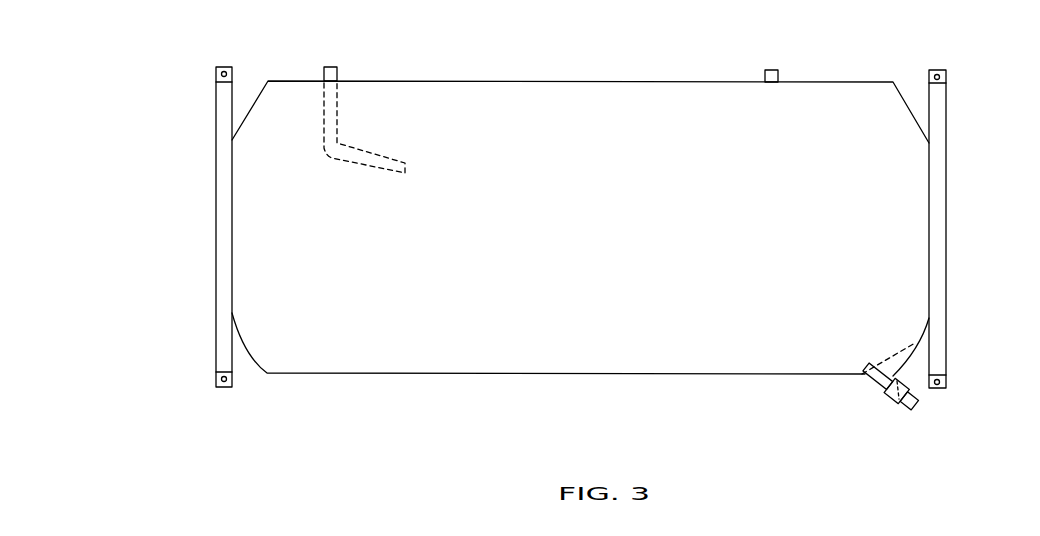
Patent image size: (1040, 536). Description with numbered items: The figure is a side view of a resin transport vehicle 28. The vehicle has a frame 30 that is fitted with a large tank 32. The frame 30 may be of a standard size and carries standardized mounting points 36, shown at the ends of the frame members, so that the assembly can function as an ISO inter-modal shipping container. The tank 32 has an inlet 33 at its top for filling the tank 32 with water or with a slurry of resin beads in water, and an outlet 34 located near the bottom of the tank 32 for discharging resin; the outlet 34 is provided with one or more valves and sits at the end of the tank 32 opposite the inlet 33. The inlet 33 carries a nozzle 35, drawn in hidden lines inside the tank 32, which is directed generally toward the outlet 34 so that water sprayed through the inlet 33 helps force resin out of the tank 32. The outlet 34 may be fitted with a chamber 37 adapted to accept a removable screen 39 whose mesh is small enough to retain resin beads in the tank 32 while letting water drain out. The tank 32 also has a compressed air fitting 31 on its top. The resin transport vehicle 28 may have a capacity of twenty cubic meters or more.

The resin transport vehicle 28 is at (305, 427).
The frame 30 is at (205, 355).
The compressed air fitting 31 is at (773, 68).
The tank 32 is at (868, 82).
The inlet 33 is at (318, 73).
The outlet 34 is at (878, 390).
The nozzle 35 is at (392, 158).
The mounting points 36 is at (950, 77).
The chamber 37 is at (903, 413).
The removable screen 39 is at (892, 402).